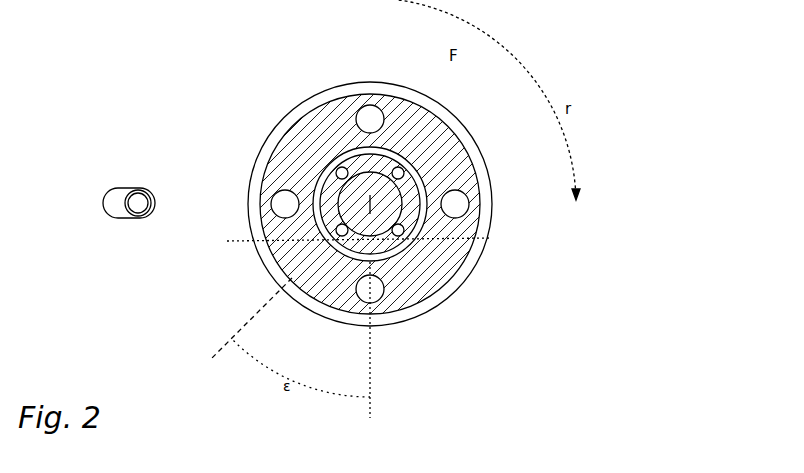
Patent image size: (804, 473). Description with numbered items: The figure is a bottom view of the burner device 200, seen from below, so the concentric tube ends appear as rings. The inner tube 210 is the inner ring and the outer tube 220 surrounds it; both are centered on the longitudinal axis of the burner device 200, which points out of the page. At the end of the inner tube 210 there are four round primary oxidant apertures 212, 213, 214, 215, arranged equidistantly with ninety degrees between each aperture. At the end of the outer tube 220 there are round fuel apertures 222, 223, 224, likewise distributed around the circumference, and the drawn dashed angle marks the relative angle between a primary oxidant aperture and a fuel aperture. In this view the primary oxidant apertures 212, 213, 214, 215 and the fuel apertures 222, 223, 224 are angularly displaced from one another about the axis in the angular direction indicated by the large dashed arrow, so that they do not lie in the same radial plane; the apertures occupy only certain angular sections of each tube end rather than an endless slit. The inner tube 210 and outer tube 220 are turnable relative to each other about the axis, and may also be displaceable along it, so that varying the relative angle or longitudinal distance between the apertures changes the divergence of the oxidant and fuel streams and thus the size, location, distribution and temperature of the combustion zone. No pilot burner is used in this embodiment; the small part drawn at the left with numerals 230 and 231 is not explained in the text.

The burner device 200 is at (581, 62).
The inner tube 210 is at (490, 238).
The primary oxidant aperture 212 is at (441, 144).
The primary oxidant aperture 213 is at (333, 254).
The primary oxidant aperture 214 is at (342, 158).
The primary oxidant aperture 215 is at (430, 305).
The outer tube 220 is at (493, 215).
The fuel aperture 222 is at (375, 104).
The fuel aperture 223 is at (320, 322).
The fuel aperture 224 is at (281, 170).
The fastener 230 is at (129, 192).
The bolt 231 is at (140, 217).